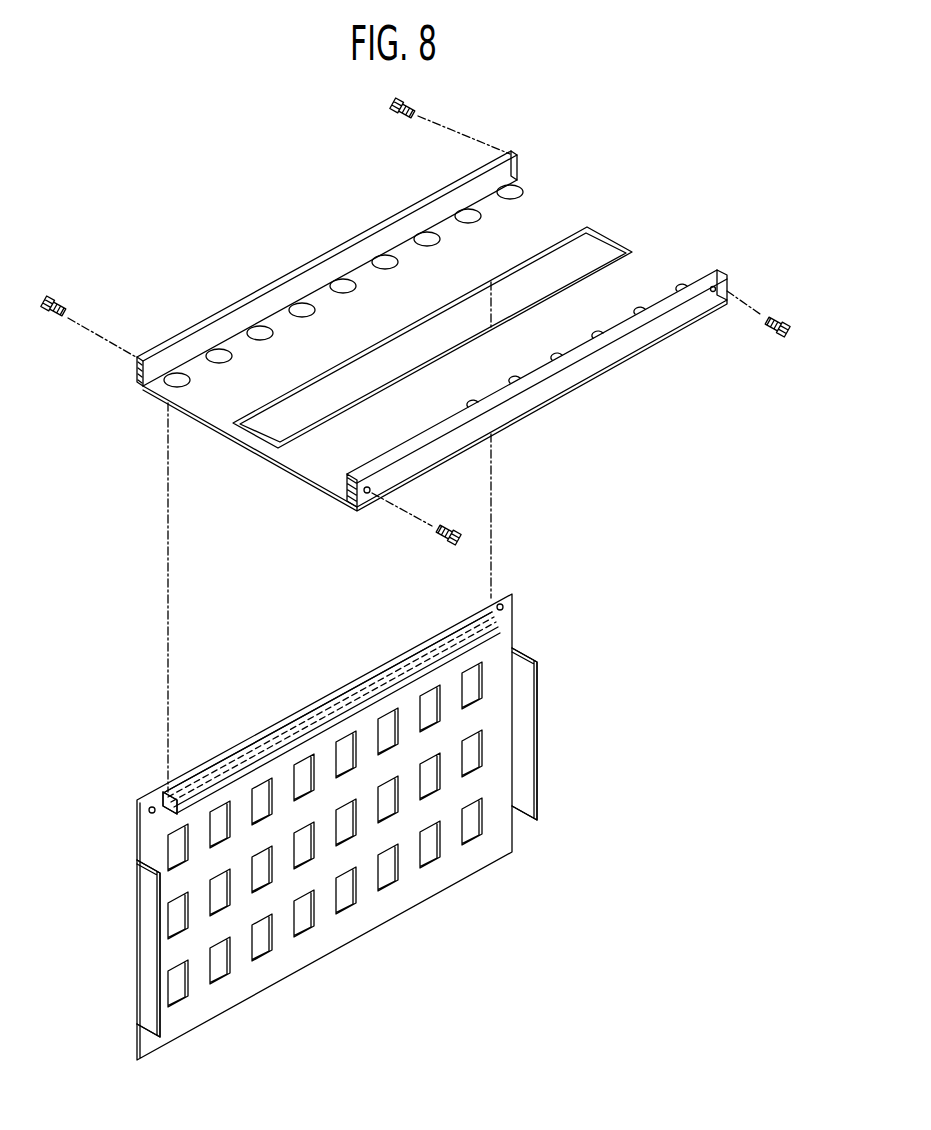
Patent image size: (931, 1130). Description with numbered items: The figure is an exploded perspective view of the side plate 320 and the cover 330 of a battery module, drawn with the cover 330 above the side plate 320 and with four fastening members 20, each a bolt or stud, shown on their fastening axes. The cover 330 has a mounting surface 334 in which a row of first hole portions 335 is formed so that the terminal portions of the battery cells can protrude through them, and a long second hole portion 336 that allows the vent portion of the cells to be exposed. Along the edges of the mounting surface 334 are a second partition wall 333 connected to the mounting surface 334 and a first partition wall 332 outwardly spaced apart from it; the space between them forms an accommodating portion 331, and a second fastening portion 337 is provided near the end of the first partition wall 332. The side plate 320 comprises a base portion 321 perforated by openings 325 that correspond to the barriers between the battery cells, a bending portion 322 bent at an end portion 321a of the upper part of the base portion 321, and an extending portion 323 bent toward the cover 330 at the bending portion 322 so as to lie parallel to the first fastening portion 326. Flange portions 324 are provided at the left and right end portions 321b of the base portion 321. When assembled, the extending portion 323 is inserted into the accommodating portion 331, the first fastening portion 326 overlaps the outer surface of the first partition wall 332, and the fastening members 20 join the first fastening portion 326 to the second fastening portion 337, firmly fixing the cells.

The fastening member 20 is at (392, 106).
The cover 330 is at (389, 359).
The accommodating portion 331 is at (137, 380).
The first partition wall 332 is at (135, 364).
The second partition wall 333 is at (185, 355).
The mounting surface 334 is at (553, 214).
The first hole portions 335 is at (464, 211).
The second hole portion 336 is at (572, 251).
The second fastening portion 337 is at (367, 494).
The side plate 320 is at (333, 827).
The base portion 321 is at (147, 845).
The end portion 321a is at (227, 766).
The left and right end portions 321b is at (530, 738).
The bending portion 322 is at (170, 795).
The extending portion 323 is at (327, 703).
The flange portion 324 is at (522, 656).
The openings 325 is at (386, 722).
The first fastening portion 326 is at (134, 817).